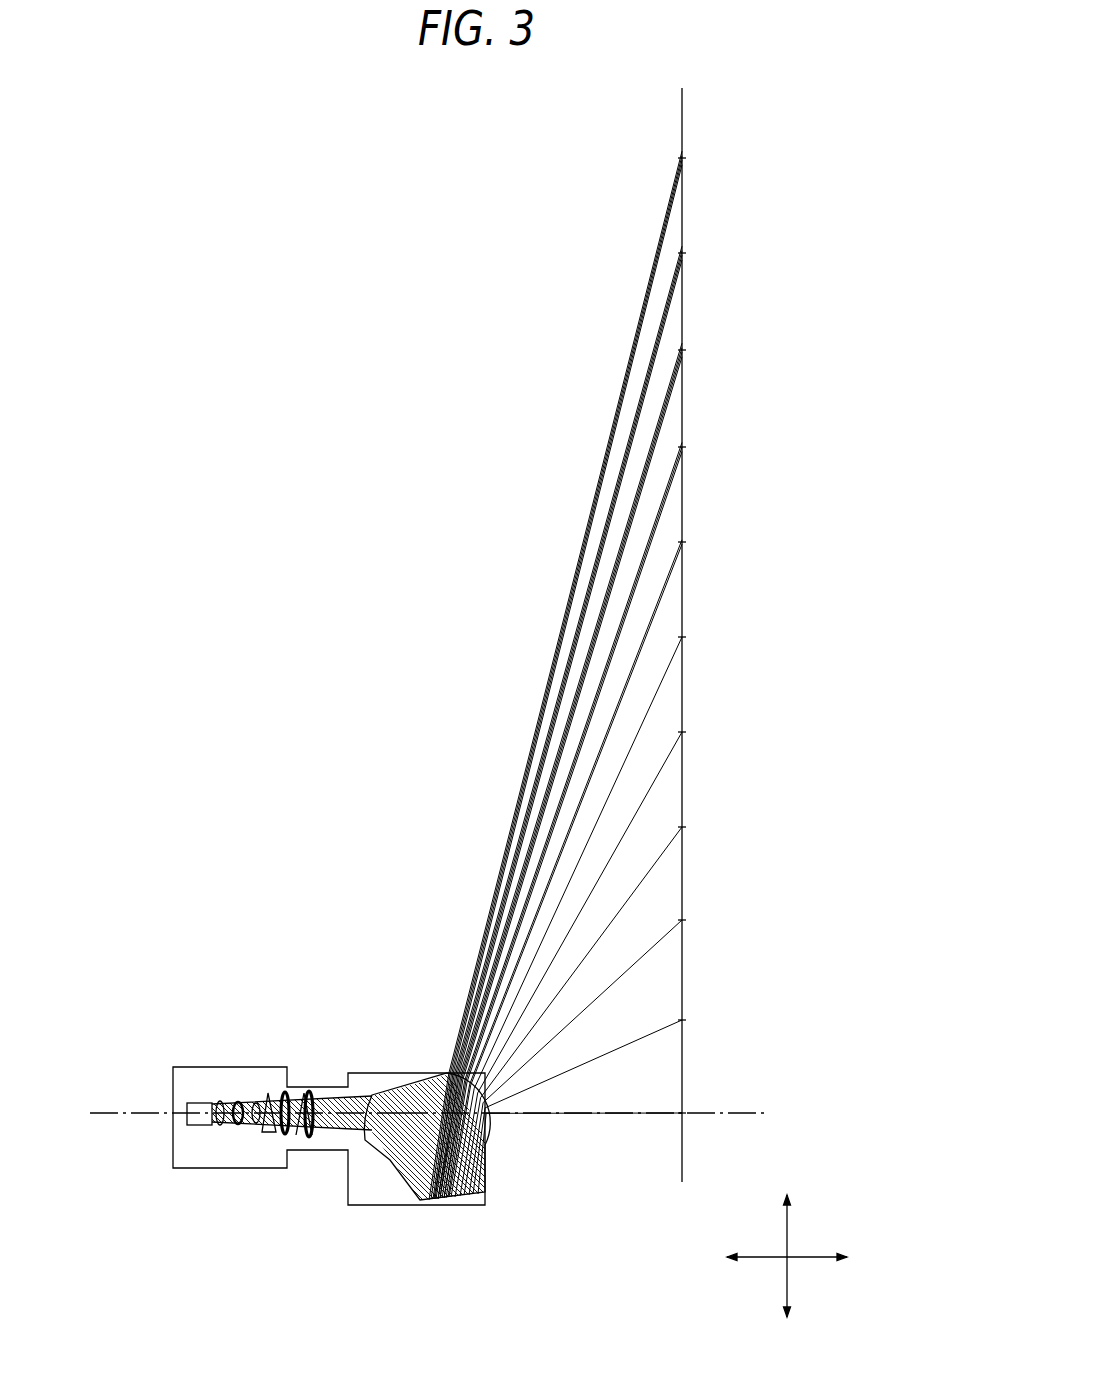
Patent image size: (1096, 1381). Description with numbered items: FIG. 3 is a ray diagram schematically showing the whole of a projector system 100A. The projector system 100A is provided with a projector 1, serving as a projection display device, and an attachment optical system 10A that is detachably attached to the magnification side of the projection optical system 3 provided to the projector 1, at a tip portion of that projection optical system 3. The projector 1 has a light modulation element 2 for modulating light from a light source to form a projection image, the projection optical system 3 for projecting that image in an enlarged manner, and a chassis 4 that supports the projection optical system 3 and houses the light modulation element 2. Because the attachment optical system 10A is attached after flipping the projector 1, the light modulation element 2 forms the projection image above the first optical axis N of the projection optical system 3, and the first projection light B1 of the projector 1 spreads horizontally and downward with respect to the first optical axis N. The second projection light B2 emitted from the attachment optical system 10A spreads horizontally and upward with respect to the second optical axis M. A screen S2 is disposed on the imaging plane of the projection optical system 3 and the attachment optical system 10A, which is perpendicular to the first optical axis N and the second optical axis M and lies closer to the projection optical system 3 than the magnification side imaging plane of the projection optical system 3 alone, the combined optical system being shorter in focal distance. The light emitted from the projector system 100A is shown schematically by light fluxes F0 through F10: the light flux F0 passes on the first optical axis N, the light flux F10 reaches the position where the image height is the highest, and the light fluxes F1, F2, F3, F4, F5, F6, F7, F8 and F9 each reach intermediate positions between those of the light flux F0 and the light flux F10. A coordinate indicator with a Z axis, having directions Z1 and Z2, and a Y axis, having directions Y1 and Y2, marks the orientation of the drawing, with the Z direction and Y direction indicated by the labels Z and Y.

The projector system 100A is at (290, 965).
The projector 1 is at (218, 1062).
The light modulation element 2 is at (188, 1107).
The projection optical system 3 is at (260, 1150).
The chassis 4 is at (210, 1170).
The attachment optical system 10A is at (372, 1068).
The first projection light B1 is at (297, 1155).
The second projection light B2 is at (497, 813).
The screen S2 is at (685, 600).
The first optical axis N is at (100, 1112).
The second optical axis M is at (752, 1113).
The light flux F0 is at (701, 1098).
The light flux F1 is at (701, 1017).
The light flux F2 is at (701, 917).
The light flux F3 is at (701, 824).
The light flux F4 is at (701, 729).
The light flux F5 is at (701, 634).
The light flux F6 is at (701, 539).
The light flux F7 is at (701, 444).
The light flux F8 is at (701, 347).
The light flux F9 is at (701, 250).
The light flux F10 is at (709, 155).
The Z1 direction Z1 is at (742, 1257).
The Z2 direction Z2 is at (839, 1257).
The Y1 direction Y1 is at (788, 1304).
The Y2 direction Y2 is at (788, 1211).
The Z axis Z is at (808, 1256).
The Y axis Y is at (790, 1283).